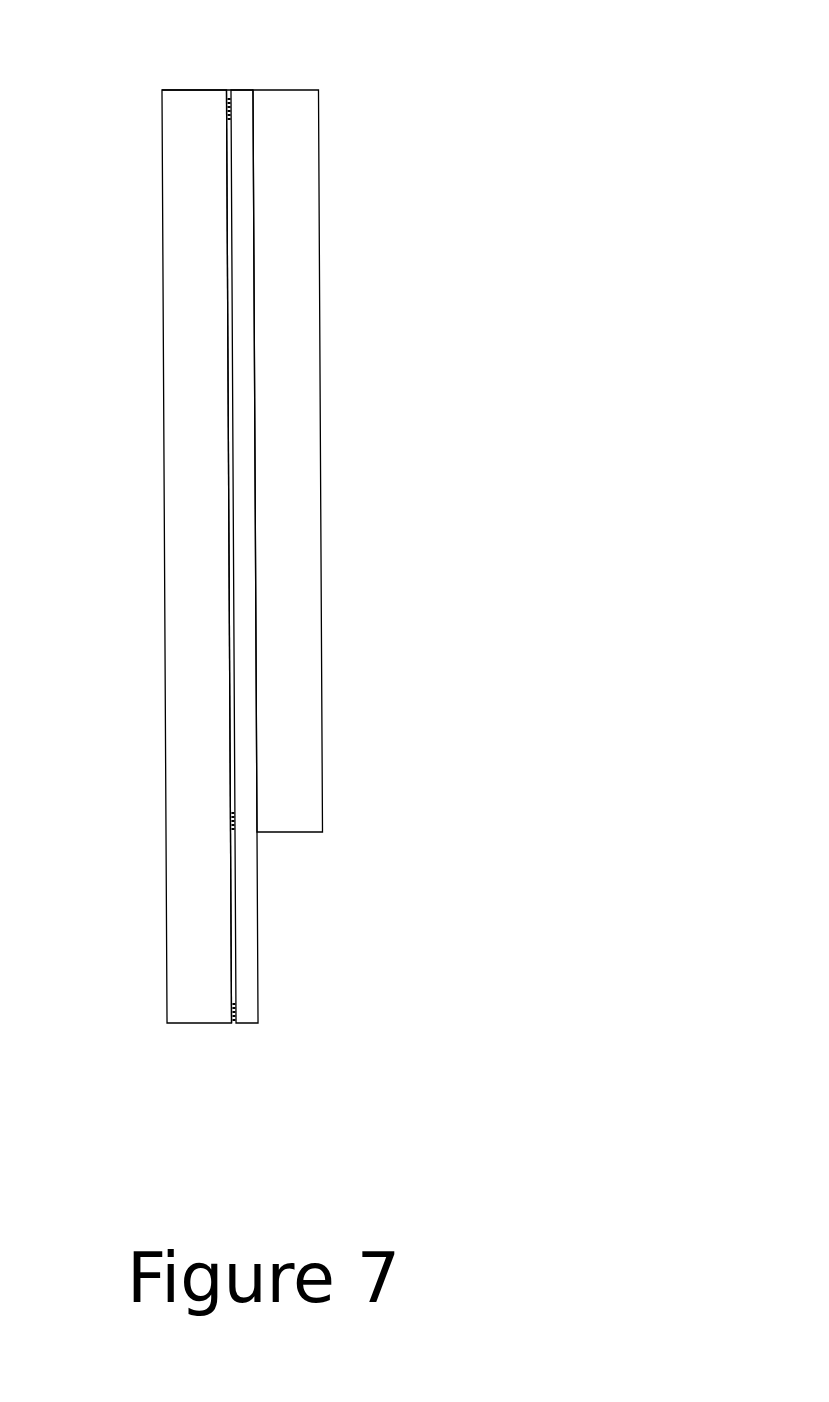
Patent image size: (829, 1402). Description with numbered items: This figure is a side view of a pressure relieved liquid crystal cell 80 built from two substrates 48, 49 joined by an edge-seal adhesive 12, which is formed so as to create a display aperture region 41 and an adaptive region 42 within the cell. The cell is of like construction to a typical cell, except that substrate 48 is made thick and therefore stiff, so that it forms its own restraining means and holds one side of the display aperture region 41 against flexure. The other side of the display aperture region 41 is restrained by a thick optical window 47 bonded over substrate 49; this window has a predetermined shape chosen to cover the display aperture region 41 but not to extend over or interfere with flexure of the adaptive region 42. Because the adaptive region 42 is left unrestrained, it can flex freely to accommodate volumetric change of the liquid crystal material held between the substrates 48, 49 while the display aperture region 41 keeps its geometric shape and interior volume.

The edge-seal adhesive 12 is at (227, 115).
The display aperture region 41 is at (238, 300).
The adaptive region 42 is at (237, 927).
The thick optical window 47 is at (307, 163).
The thick substrate 48 is at (162, 90).
The substrate 49 is at (247, 90).
The cell 80 is at (257, 56).